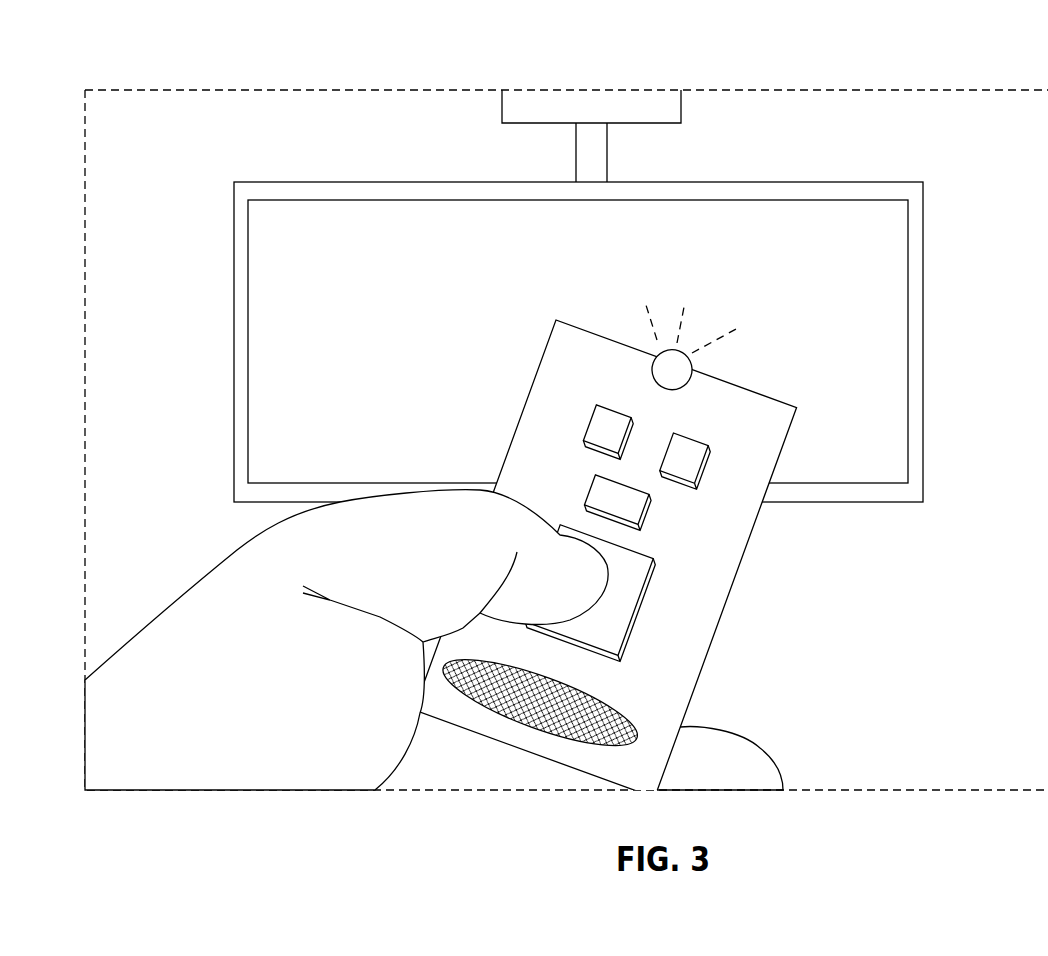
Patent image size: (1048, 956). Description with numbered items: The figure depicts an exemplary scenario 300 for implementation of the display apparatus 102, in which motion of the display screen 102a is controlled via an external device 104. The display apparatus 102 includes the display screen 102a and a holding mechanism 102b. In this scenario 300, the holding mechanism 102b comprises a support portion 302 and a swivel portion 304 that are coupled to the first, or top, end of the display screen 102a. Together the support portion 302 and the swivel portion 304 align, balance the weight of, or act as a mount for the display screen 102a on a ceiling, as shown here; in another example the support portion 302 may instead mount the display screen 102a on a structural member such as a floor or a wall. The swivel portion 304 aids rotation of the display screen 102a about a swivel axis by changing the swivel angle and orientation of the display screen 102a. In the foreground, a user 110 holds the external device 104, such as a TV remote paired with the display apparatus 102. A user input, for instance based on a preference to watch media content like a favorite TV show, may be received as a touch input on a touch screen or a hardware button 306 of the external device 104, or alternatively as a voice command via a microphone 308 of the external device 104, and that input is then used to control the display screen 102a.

The exemplary scenario 300 is at (150, 64).
The display apparatus 102 is at (578, 304).
The display screen 102a is at (712, 200).
The holding mechanism 102b is at (514, 136).
The support portion 302 is at (502, 112).
The swivel portion 304 is at (576, 150).
The external device 104 is at (682, 577).
The hardware button 306 is at (643, 612).
The microphone 308 is at (613, 701).
The user 110 is at (195, 588).